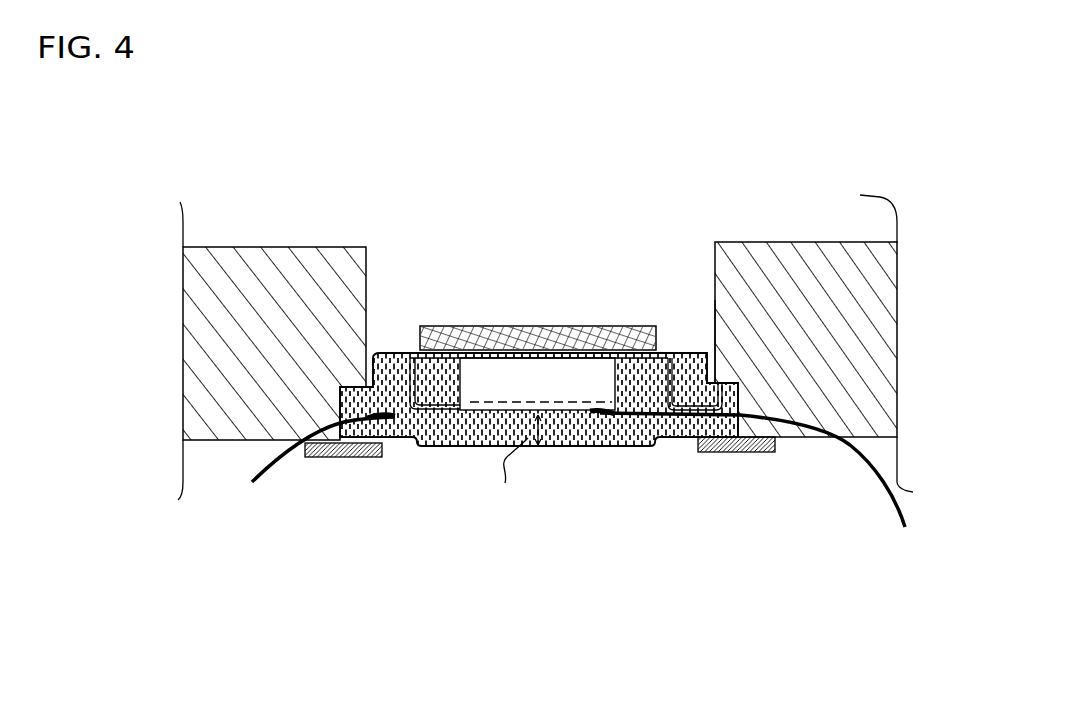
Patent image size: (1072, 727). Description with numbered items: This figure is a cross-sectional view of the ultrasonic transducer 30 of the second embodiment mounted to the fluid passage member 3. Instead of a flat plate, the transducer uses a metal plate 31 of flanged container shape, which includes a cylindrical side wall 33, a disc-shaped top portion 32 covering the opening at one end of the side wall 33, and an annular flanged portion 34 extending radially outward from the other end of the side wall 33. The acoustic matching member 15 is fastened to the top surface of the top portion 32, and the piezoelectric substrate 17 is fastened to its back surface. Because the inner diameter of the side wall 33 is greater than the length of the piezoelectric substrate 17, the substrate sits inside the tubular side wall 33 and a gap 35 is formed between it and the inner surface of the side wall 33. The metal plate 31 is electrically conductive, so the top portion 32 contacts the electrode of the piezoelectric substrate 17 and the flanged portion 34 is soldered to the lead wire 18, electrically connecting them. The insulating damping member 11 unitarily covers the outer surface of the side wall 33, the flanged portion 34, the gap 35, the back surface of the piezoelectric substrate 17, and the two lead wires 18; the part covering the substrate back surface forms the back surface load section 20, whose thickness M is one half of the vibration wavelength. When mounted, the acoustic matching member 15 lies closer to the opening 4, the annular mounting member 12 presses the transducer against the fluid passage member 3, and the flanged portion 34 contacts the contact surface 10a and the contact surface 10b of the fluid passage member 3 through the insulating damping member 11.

The fluid passage member 3 is at (606, 318).
The opening 4 is at (555, 366).
The contact surface 10a is at (720, 390).
The contact surface 10b is at (740, 390).
The insulating damping member 11 is at (400, 355).
The annular mounting member 12 is at (898, 458).
The acoustic matching member 15 is at (442, 327).
The piezoelectric substrate 17 is at (525, 382).
The lead wire 18 is at (895, 498).
The back surface load section 20 is at (590, 418).
The ultrasonic transducer 30 is at (555, 366).
The metal plate 31 is at (375, 408).
The top portion 32 is at (490, 327).
The side wall 33 is at (672, 352).
The flanged portion 34 is at (742, 412).
The gap 35 is at (623, 400).